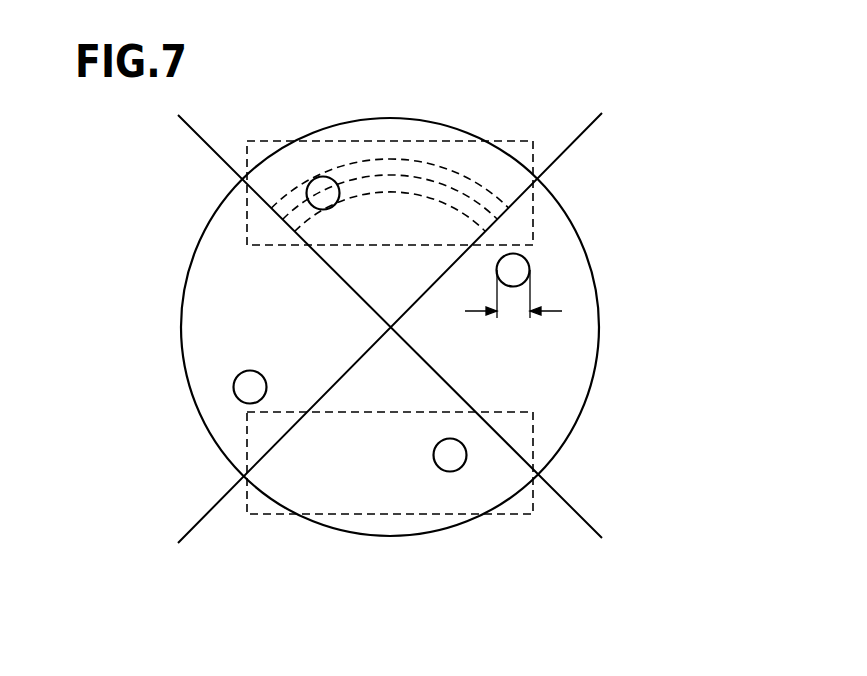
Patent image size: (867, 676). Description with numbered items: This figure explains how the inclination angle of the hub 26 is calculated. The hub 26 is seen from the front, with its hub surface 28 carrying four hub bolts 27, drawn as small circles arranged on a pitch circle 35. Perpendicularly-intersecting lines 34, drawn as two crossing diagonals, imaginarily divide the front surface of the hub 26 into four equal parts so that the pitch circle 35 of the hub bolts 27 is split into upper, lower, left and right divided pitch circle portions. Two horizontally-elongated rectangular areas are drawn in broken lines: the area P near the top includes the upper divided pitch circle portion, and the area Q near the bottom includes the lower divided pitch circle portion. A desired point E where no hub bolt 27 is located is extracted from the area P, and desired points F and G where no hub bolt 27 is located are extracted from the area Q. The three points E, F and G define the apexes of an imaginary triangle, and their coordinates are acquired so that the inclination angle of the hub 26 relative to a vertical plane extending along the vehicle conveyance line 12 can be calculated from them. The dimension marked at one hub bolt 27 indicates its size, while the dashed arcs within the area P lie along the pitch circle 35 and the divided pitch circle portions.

The hub 26 is at (426, 331).
The hub bolt 27 is at (318, 188).
The hub surface 28 is at (558, 402).
The vehicle conveyance line 12 is at (513, 307).
The perpendicularly-intersecting lines 34 is at (202, 138).
The pitch circle 35 is at (293, 213).
The point E is at (390, 150).
The horizontally-elongated rectangular area P is at (525, 152).
The point F is at (293, 485).
The point G is at (490, 483).
The horizontally-elongated rectangular area Q is at (527, 500).